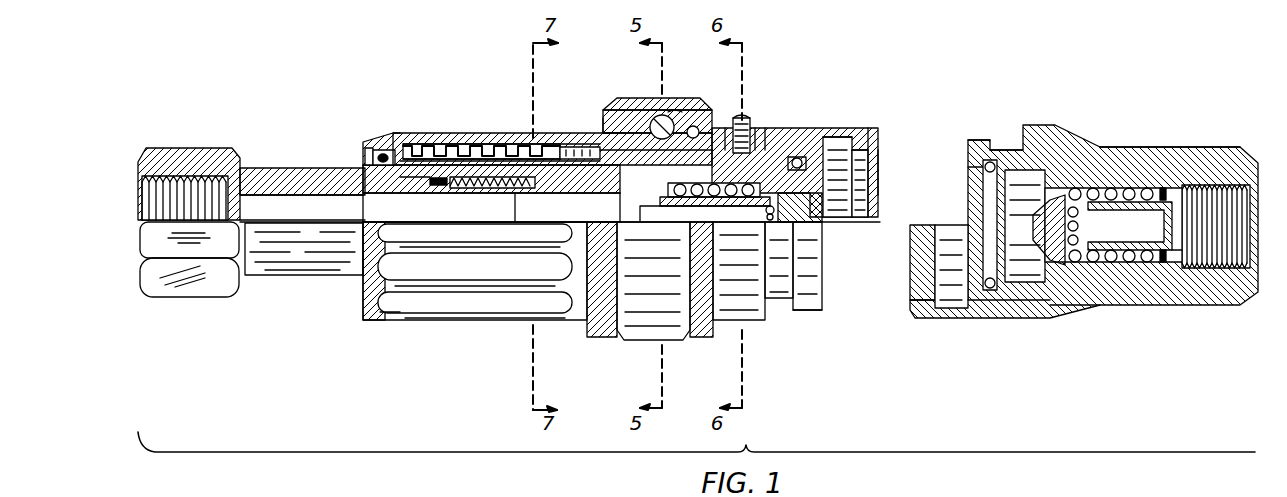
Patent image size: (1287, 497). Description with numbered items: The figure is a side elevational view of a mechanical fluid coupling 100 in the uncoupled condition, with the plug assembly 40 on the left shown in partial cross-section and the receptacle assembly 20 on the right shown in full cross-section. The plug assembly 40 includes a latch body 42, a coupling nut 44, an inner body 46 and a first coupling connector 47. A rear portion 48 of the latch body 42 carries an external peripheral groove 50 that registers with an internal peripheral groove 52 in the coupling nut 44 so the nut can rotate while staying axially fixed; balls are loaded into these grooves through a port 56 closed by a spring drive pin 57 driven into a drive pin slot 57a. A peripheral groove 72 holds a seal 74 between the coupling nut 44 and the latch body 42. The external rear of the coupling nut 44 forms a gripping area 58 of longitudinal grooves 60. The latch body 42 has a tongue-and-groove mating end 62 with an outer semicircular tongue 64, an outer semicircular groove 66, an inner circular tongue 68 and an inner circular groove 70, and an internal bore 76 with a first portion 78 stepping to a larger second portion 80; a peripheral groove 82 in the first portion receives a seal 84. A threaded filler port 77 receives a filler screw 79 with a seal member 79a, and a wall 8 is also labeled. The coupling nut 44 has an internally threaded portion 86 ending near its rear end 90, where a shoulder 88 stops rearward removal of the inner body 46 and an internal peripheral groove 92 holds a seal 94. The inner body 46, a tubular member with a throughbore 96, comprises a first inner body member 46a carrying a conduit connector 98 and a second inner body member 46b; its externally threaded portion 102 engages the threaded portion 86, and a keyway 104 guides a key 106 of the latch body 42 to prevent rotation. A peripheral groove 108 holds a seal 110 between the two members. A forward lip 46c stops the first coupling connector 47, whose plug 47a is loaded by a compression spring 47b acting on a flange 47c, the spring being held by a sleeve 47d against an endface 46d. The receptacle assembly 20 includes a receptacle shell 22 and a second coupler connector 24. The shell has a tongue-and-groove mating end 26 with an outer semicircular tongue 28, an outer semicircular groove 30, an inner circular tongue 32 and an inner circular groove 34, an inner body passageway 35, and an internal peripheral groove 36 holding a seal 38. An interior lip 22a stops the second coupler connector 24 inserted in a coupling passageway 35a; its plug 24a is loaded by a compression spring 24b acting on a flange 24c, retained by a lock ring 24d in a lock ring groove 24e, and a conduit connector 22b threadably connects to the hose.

The body wall 8 is at (655, 158).
The receptacle assembly 20 is at (1145, 147).
The receptacle shell 22 is at (1115, 147).
The interior lip 22a is at (1075, 306).
The conduit connector 22b is at (1215, 188).
The second coupler connector 24 is at (1058, 215).
The plug 24a is at (1050, 262).
The compression spring 24b is at (1135, 264).
The flange 24c is at (1094, 190).
The lock ring 24d is at (1172, 195).
The lock ring groove 24e is at (1158, 200).
The tongue-and-groove mating end 26 is at (978, 140).
The outer semicircular tongue 28 is at (913, 316).
The outer semicircular groove 30 is at (950, 310).
The inner circular tongue 32 is at (975, 160).
The inner circular groove 34 is at (1005, 150).
The inner body passageway 35 is at (1027, 170).
The coupling passageway 35a is at (1174, 265).
The internal peripheral groove 36 is at (990, 292).
The seal 38 is at (1008, 318).
The plug assembly 40 is at (453, 322).
The latch body 42 is at (790, 128).
The coupling nut 44 is at (504, 322).
The inner body 46 is at (575, 178).
The first inner body member 46a is at (330, 170).
The second inner body member 46b is at (495, 170).
The forward lip 46c is at (880, 178).
The endface 46d is at (545, 190).
The first coupling connector 47 is at (822, 215).
The plug 47a is at (812, 214).
The compression spring 47b is at (662, 200).
The flange 47c is at (780, 300).
The sleeve 47d is at (600, 235).
The rear portion 48 is at (620, 112).
The external peripheral groove 50 is at (660, 115).
The internal peripheral groove 52 is at (690, 126).
The port 56 is at (636, 120).
The spring drive pin 57 is at (672, 112).
The drive pin slot 57a is at (606, 118).
The gripping area 58 is at (405, 308).
The longitudinal grooves 60 is at (427, 145).
The tongue-and-groove mating end 62 is at (872, 138).
The outer semicircular tongue 64 is at (860, 152).
The outer semicircular groove 66 is at (840, 165).
The inner circular tongue 68 is at (808, 312).
The inner circular groove 70 is at (800, 312).
The peripheral groove 72 is at (745, 135).
The seal 74 is at (748, 140).
The internal bore 76 is at (880, 160).
The threaded filler port 77 is at (773, 135).
The first portion 78 is at (800, 157).
The filler screw 79 is at (760, 130).
The seal member 79a is at (736, 140).
The second portion 80 is at (797, 160).
The peripheral groove 82 is at (834, 137).
The seal 84 is at (842, 150).
The internally threaded portion 86 is at (452, 150).
The shoulder 88 is at (430, 148).
The rear end 90 is at (388, 140).
The internal peripheral groove 92 is at (390, 140).
The seal 94 is at (372, 158).
The throughbore 96 is at (268, 197).
The conduit connector 98 is at (183, 150).
The mechanical fluid coupling 100 is at (934, 82).
The externally threaded portion 102 is at (473, 160).
The keyway 104 is at (545, 160).
The key 106 is at (614, 130).
The peripheral groove 108 is at (440, 186).
The seal 110 is at (410, 190).